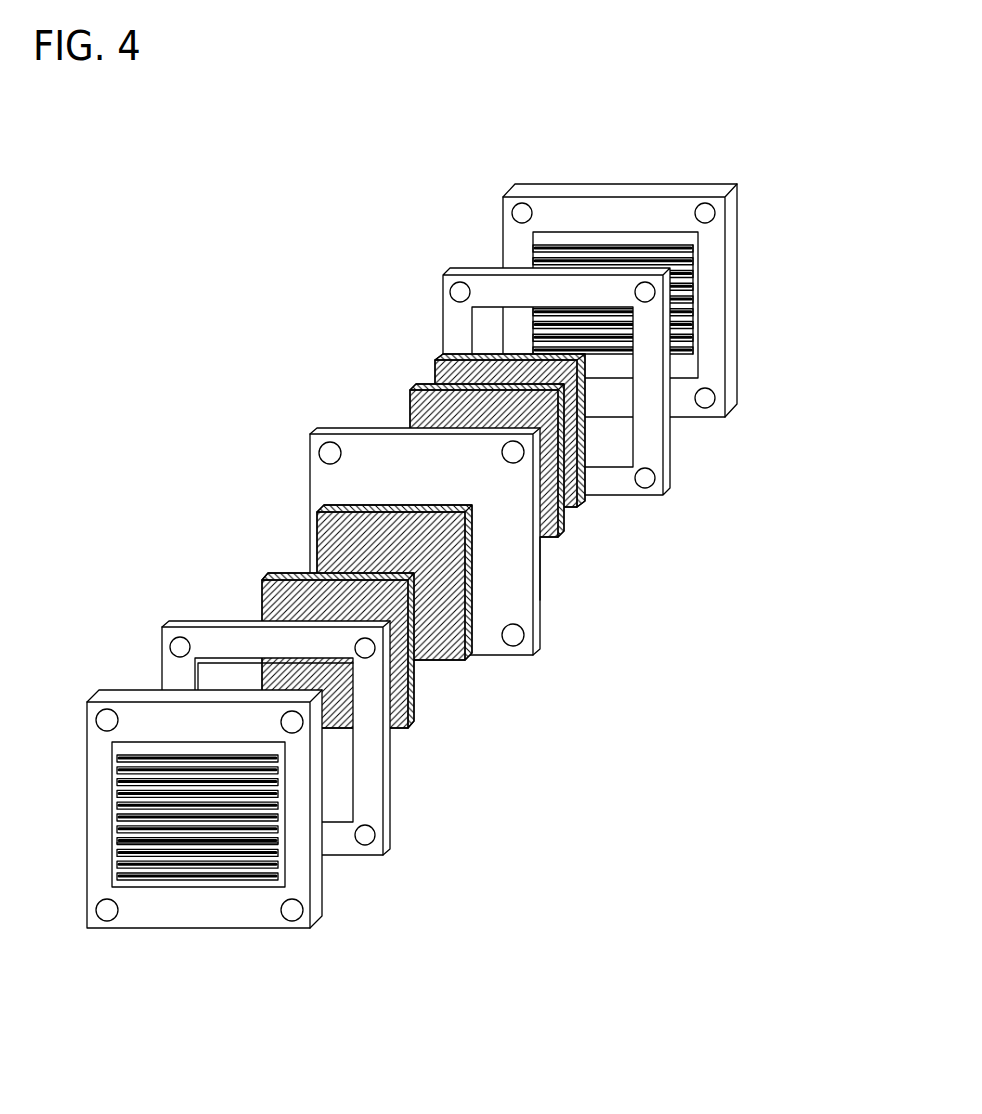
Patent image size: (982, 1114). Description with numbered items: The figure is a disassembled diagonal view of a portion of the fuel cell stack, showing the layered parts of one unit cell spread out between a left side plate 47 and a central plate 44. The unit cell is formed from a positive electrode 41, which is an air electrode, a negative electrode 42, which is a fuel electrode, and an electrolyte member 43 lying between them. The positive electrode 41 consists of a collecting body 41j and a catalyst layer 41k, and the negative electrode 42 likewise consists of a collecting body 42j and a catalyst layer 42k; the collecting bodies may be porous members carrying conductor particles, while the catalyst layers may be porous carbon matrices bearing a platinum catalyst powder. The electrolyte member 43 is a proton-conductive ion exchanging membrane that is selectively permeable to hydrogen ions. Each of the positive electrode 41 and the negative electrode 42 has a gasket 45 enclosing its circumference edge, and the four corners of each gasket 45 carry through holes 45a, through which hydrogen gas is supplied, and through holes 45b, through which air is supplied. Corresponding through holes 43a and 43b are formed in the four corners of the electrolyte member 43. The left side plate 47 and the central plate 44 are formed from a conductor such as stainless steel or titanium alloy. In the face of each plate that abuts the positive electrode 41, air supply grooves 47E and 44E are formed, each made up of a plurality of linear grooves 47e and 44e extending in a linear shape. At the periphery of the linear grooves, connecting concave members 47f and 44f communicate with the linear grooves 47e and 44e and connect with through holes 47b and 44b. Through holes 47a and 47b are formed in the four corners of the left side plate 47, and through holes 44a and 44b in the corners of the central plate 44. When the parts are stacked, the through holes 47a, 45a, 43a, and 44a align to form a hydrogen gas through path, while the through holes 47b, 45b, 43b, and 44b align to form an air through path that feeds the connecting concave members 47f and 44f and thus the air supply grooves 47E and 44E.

The left side plate 47 is at (581, 283).
The through hole 47a is at (702, 210).
The through hole 47b is at (518, 214).
The linear groove 47e is at (683, 262).
The connecting concave member 47f is at (618, 240).
The air supply grooves 47E is at (533, 258).
The gasket 45 is at (476, 548).
The through hole 45a is at (649, 296).
The through hole 45b is at (458, 290).
The positive electrode 41 is at (447, 421).
The collecting body 41j is at (460, 355).
The catalyst layer 41k is at (428, 386).
The electrolyte member 43 is at (427, 547).
The through hole 43a is at (558, 535).
The through hole 43b is at (326, 452).
The negative electrode 42 is at (334, 614).
The collecting body 42j is at (326, 628).
The catalyst layer 42k is at (323, 507).
The central plate 44 is at (243, 821).
The through hole 44a is at (293, 724).
The through hole 44b is at (106, 722).
The linear groove 44e is at (178, 865).
The connecting concave member 44f is at (233, 880).
The air supply grooves 44E is at (115, 777).